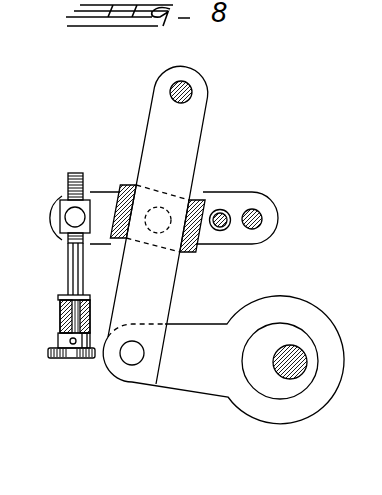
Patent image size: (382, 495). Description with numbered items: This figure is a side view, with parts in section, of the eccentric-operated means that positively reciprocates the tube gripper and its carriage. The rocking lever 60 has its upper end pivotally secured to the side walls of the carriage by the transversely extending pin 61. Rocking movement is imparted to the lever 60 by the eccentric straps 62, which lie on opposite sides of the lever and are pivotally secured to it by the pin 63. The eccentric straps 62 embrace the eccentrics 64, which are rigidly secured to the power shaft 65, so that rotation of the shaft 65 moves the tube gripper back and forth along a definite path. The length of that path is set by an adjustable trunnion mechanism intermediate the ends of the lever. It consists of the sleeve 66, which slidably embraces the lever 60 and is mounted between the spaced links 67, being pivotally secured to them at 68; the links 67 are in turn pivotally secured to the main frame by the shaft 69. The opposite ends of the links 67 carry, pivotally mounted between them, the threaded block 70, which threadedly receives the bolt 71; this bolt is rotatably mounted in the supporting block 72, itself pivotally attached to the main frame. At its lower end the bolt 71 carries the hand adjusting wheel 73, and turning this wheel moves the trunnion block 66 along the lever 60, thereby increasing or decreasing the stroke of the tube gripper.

The rocking lever 60 is at (191, 134).
The transversely extending pin 61 is at (191, 89).
The eccentric straps 62 is at (213, 333).
The pin 63 is at (128, 359).
The eccentrics 64 is at (257, 382).
The power shaft 65 is at (297, 378).
The sleeve 66 is at (132, 183).
The spaced links 67 is at (249, 191).
The pivot 68 is at (163, 209).
The shaft 69 is at (262, 212).
The threaded block 70 is at (61, 218).
The bolt 71 is at (70, 277).
The supporting block 72 is at (58, 318).
The hand adjusting wheel 73 is at (60, 352).